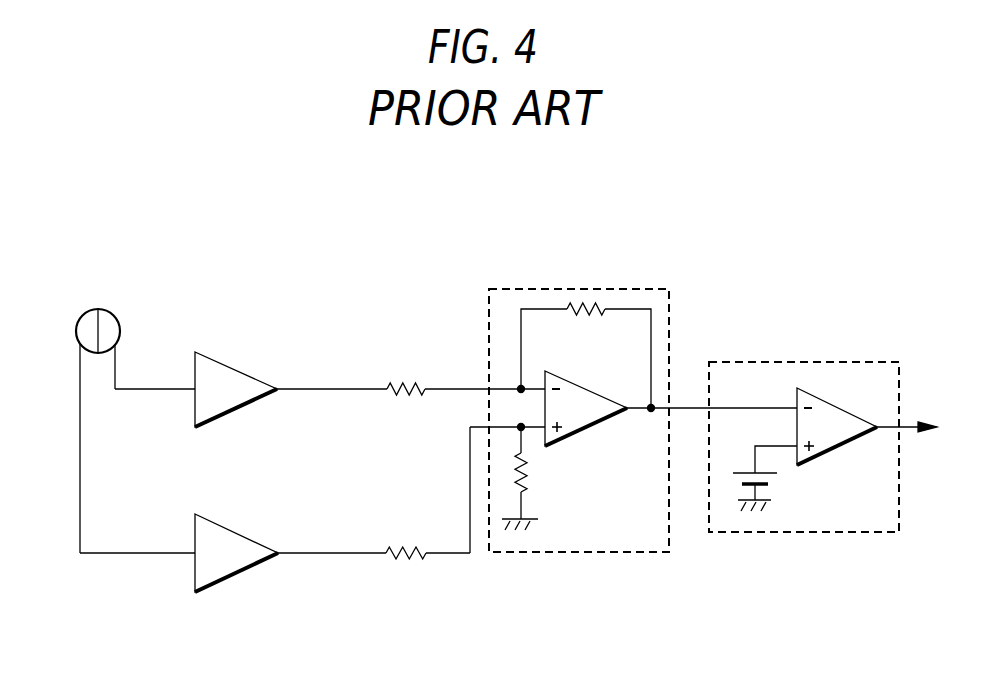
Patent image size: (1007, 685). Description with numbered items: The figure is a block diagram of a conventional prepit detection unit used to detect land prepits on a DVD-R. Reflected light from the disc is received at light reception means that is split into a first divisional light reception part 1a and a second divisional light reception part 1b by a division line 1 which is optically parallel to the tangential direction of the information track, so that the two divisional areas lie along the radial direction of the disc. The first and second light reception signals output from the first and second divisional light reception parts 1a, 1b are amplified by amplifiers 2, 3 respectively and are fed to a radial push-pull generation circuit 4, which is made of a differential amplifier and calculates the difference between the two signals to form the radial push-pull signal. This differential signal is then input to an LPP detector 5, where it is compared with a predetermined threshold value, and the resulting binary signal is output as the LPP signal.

The division line 1 is at (89, 304).
The first divisional light reception part 1a is at (76, 330).
The second divisional light reception part 1b is at (118, 330).
The amplifier 2 is at (238, 368).
The amplifier 3 is at (238, 530).
The radial push-pull generation circuit 4 is at (577, 288).
The LPP detector 5 is at (802, 361).